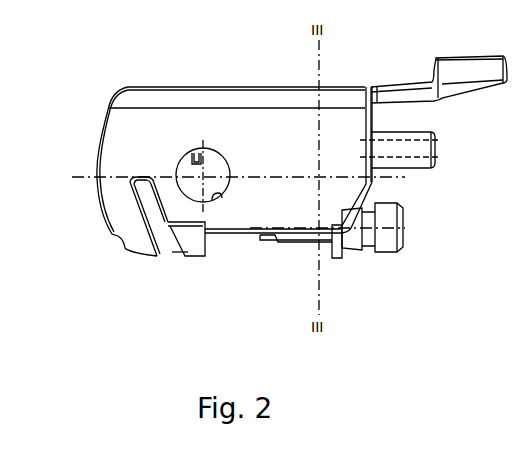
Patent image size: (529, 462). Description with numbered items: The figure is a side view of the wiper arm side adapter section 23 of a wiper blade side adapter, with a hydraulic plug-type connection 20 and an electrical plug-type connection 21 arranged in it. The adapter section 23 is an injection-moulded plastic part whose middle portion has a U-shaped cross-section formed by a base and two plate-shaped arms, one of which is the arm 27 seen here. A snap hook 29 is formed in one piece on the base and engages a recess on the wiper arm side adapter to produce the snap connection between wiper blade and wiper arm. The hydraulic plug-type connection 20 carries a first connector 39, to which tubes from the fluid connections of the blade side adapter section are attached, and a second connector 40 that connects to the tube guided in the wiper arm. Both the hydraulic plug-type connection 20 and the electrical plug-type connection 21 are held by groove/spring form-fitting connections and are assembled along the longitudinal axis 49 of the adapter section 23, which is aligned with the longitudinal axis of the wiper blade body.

The wiper arm side adapter section 23 is at (163, 132).
The longitudinal axis 49 is at (72, 177).
The snap hook 29 is at (468, 70).
The electrical plug-type connection 21 is at (408, 153).
The plate-shaped arm 27 is at (215, 198).
The first connector 39 is at (300, 243).
The hydraulic plug-type connection 20 is at (346, 228).
The second connector 40 is at (388, 236).